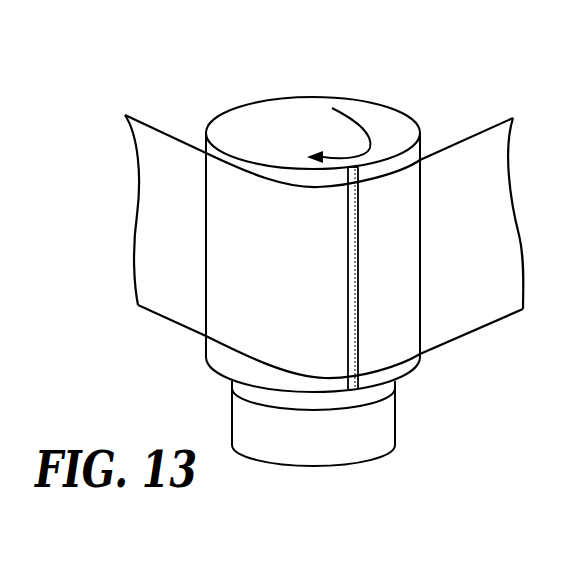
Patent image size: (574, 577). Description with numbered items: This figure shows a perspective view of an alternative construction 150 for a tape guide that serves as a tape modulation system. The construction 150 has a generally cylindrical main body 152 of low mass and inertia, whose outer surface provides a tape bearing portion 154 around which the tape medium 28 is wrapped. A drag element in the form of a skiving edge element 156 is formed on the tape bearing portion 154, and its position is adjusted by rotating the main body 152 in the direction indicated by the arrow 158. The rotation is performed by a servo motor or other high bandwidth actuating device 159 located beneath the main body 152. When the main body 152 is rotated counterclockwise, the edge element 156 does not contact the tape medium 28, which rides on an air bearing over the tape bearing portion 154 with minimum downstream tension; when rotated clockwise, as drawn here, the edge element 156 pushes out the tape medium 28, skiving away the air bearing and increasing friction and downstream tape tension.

The alternative construction 150 is at (211, 68).
The tape medium 28 is at (158, 297).
The main body 152 is at (300, 97).
The tape bearing portion 154 is at (225, 358).
The skiving edge element 156 is at (358, 330).
The arrow 158 is at (357, 128).
The actuating device 159 is at (355, 447).